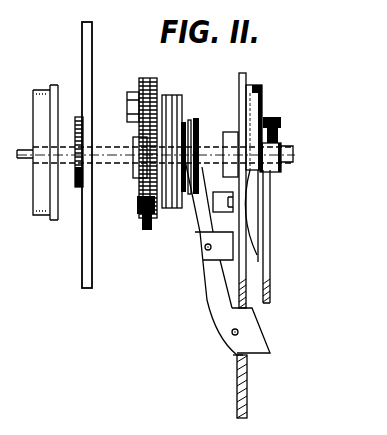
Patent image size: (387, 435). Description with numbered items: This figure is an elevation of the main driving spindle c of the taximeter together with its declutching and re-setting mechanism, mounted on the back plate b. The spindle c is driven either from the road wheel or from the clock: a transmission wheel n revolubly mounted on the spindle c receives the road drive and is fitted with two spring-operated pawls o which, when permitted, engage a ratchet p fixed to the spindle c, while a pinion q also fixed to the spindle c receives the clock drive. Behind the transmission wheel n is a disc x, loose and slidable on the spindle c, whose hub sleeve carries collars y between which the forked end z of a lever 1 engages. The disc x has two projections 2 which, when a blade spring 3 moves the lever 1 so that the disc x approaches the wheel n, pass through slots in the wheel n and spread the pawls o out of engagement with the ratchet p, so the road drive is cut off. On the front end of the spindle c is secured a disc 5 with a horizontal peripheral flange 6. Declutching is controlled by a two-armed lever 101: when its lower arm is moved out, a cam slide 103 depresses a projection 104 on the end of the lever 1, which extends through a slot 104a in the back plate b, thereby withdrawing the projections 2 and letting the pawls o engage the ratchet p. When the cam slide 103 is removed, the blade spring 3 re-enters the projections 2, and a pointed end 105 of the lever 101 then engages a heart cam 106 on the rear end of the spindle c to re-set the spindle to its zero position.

The lever 1 is at (214, 322).
The projections 2 is at (145, 79).
The blade spring 3 is at (214, 212).
The disc 5 is at (74, 155).
The peripheral flange 6 is at (33, 103).
The two-armed lever 101 is at (270, 286).
The cam slide 103 is at (262, 214).
The projection 104 is at (258, 339).
The slot 104a is at (240, 356).
The pointed end 105 is at (274, 180).
The heart cam 106 is at (253, 96).
The back plate b is at (247, 387).
The main driving spindle c is at (25, 161).
The transmission wheel n is at (150, 227).
The spring-operated pawls o is at (133, 92).
The ratchet p is at (133, 176).
The pinion q is at (73, 189).
The disc x is at (167, 96).
The collars y is at (197, 126).
The forked end z is at (183, 123).